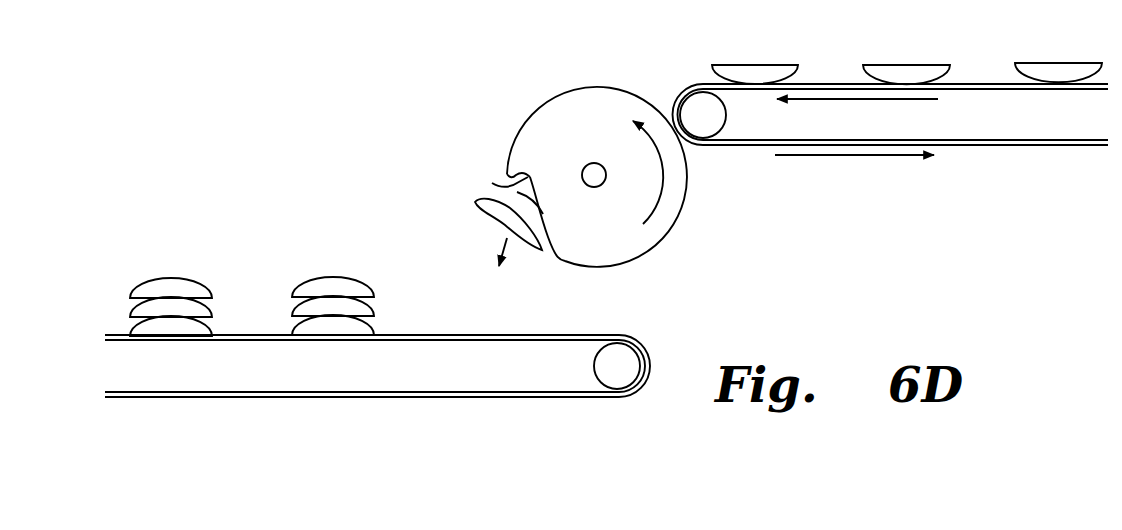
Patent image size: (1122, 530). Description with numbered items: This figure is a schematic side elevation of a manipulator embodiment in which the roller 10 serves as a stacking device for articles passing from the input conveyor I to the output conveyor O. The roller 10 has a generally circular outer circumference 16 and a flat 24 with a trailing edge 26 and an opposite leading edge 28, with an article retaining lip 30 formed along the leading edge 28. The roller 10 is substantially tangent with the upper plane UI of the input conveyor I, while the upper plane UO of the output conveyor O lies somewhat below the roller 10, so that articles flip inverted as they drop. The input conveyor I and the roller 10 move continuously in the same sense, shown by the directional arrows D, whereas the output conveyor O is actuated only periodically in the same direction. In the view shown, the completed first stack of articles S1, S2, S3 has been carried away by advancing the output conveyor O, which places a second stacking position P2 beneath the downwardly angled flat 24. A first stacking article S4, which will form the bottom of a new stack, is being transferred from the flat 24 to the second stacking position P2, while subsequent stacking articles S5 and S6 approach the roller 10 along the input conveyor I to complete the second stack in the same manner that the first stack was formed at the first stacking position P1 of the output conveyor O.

The manipulator roller 10 is at (478, 88).
The circular outer circumference 16 is at (581, 87).
The flat 24 is at (517, 192).
The trailing edge 26 is at (565, 262).
The leading edge 28 is at (492, 183).
The article retaining lip 30 is at (507, 175).
The first stacked article S1 is at (373, 328).
The second stacking article S2 is at (377, 303).
The third stacking article S3 is at (360, 283).
The first stacking article of second stack S4 is at (496, 220).
The subsequent stacking article S5 is at (748, 63).
The subsequent stacking article S6 is at (902, 63).
The upper plane of output conveyor UO is at (248, 335).
The upper surface or plane of input conveyor UI is at (975, 83).
The first stacking position P1 is at (337, 343).
The second stacking position P2 is at (500, 334).
The input conveyor I is at (985, 188).
The output conveyor O is at (325, 413).
The directional arrow D is at (663, 177).